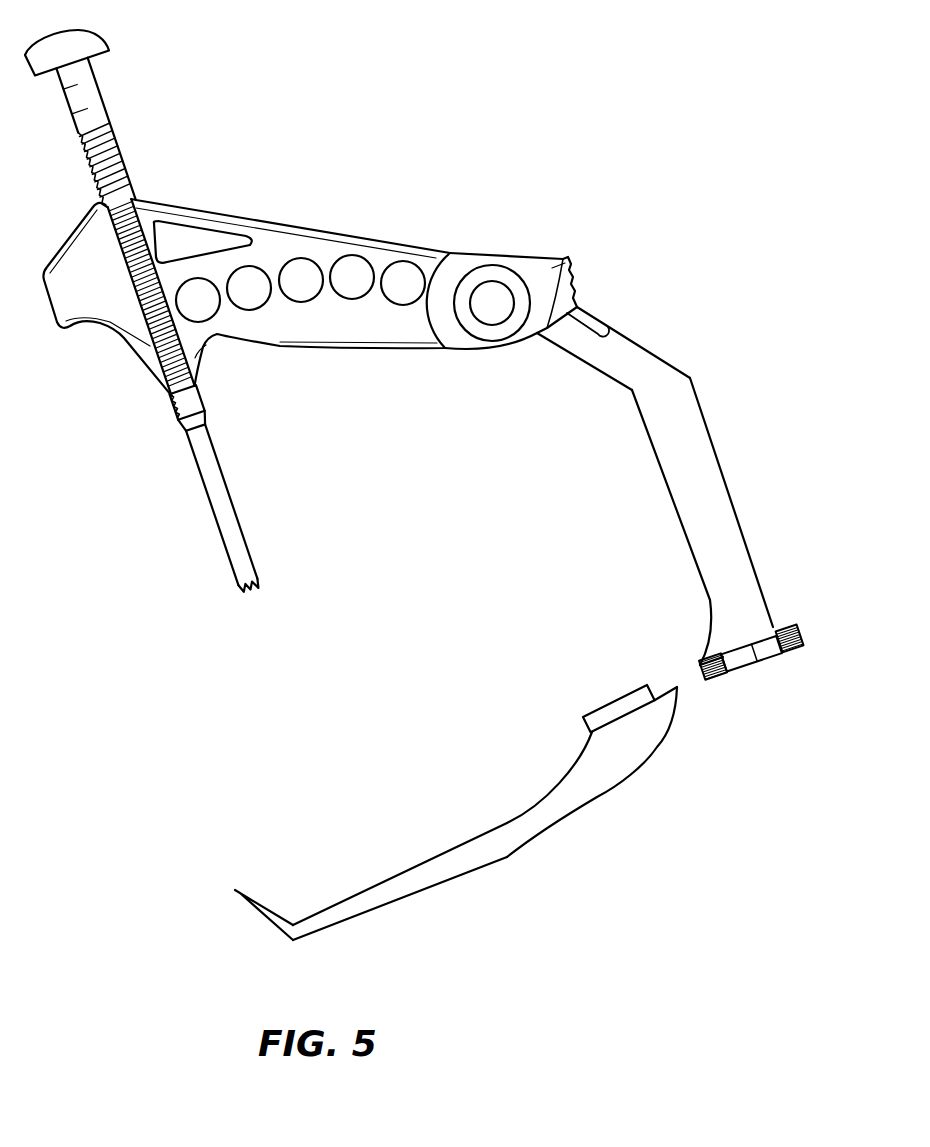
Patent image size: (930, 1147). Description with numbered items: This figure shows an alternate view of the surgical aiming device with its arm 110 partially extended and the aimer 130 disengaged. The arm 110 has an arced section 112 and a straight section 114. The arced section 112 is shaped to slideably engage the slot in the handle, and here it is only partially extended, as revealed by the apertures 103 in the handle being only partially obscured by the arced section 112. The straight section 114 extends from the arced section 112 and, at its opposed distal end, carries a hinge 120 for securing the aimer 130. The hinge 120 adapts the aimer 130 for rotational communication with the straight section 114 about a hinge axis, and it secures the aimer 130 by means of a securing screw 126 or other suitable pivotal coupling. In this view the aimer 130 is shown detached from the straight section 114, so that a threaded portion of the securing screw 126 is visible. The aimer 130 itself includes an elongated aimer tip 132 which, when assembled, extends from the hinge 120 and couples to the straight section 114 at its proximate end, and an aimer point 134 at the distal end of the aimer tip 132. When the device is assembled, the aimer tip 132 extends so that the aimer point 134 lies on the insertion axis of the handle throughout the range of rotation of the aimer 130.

The apertures 103 is at (400, 287).
The arm 110 is at (663, 464).
The arced section 112 is at (634, 332).
The straight section 114 is at (755, 520).
The hinge 120 is at (771, 648).
The securing screw 126 is at (715, 683).
The aimer 130 is at (421, 812).
The aimer tip 132 is at (602, 793).
The aimer point 134 is at (236, 890).